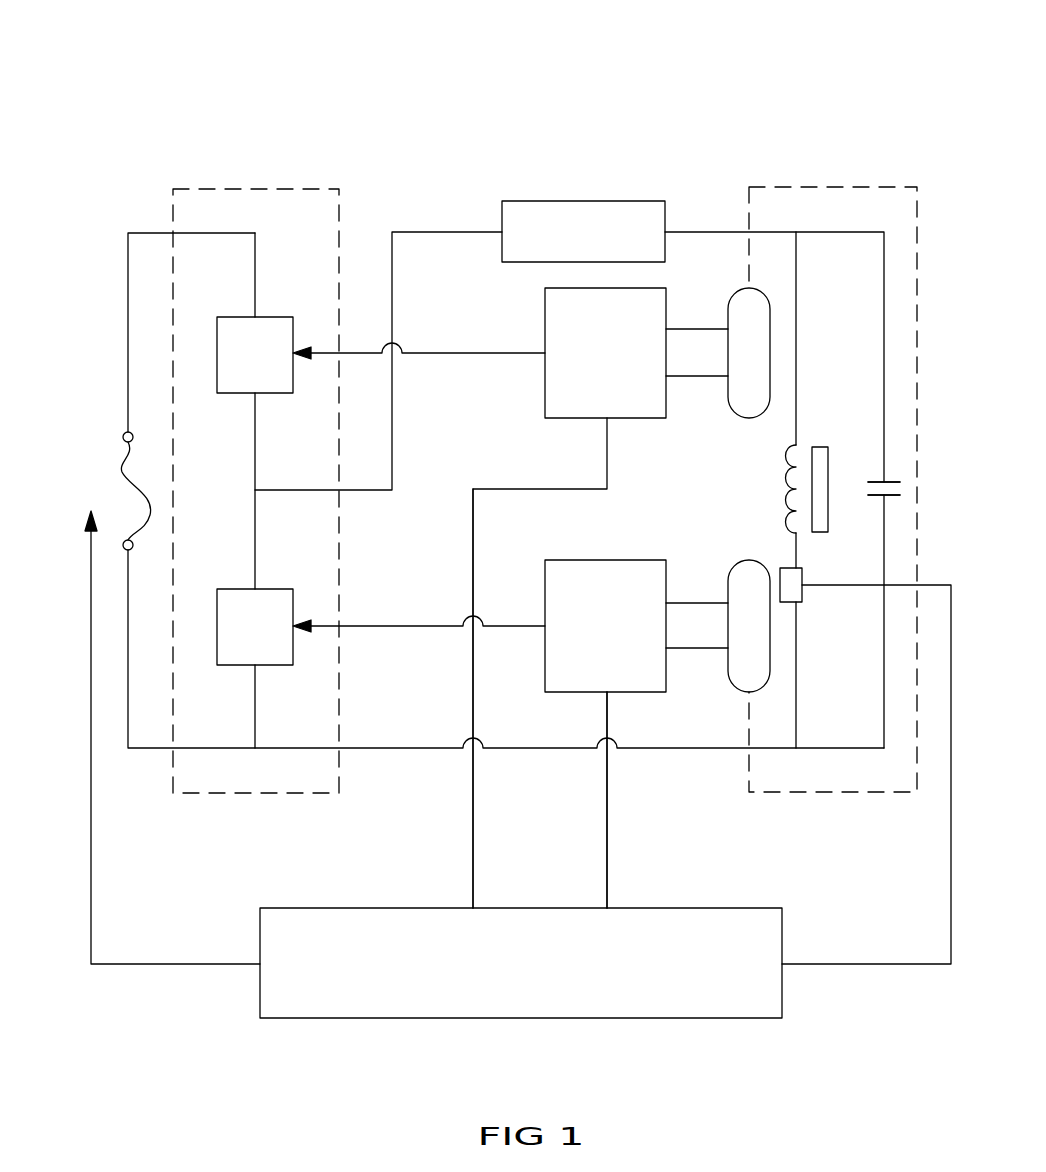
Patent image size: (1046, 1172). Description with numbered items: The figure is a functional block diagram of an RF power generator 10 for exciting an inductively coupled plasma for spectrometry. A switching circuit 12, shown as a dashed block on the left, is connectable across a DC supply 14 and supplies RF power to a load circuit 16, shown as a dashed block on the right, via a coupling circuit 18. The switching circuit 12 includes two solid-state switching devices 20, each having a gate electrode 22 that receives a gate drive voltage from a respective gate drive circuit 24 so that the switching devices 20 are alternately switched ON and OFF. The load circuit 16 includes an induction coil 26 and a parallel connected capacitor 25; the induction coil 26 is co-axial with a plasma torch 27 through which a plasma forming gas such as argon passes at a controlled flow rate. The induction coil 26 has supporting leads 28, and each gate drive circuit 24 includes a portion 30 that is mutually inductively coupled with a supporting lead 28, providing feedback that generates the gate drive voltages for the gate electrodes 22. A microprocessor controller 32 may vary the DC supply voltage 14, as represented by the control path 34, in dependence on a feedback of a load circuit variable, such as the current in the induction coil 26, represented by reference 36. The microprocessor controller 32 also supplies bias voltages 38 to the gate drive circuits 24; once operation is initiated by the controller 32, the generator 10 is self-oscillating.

The RF power generator 10 is at (376, 92).
The switching circuit 12 is at (244, 182).
The DC supply 14 is at (119, 491).
The load circuit 16 is at (836, 182).
The coupling circuit 18 is at (582, 196).
The solid-state switching device 20 is at (268, 338).
The gate electrode 22 is at (322, 360).
The gate drive circuit 24 is at (563, 392).
The capacitor 25 is at (882, 500).
The induction coil 26 is at (785, 490).
The plasma torch 27 is at (828, 460).
The supporting lead 28 is at (796, 375).
The portion of gate drive circuit 30 is at (770, 330).
The microprocessor controller 32 is at (430, 940).
The DC supply voltage control 34 is at (91, 775).
The load circuit variable feedback 36 is at (951, 845).
The bias voltages 38 is at (473, 568).